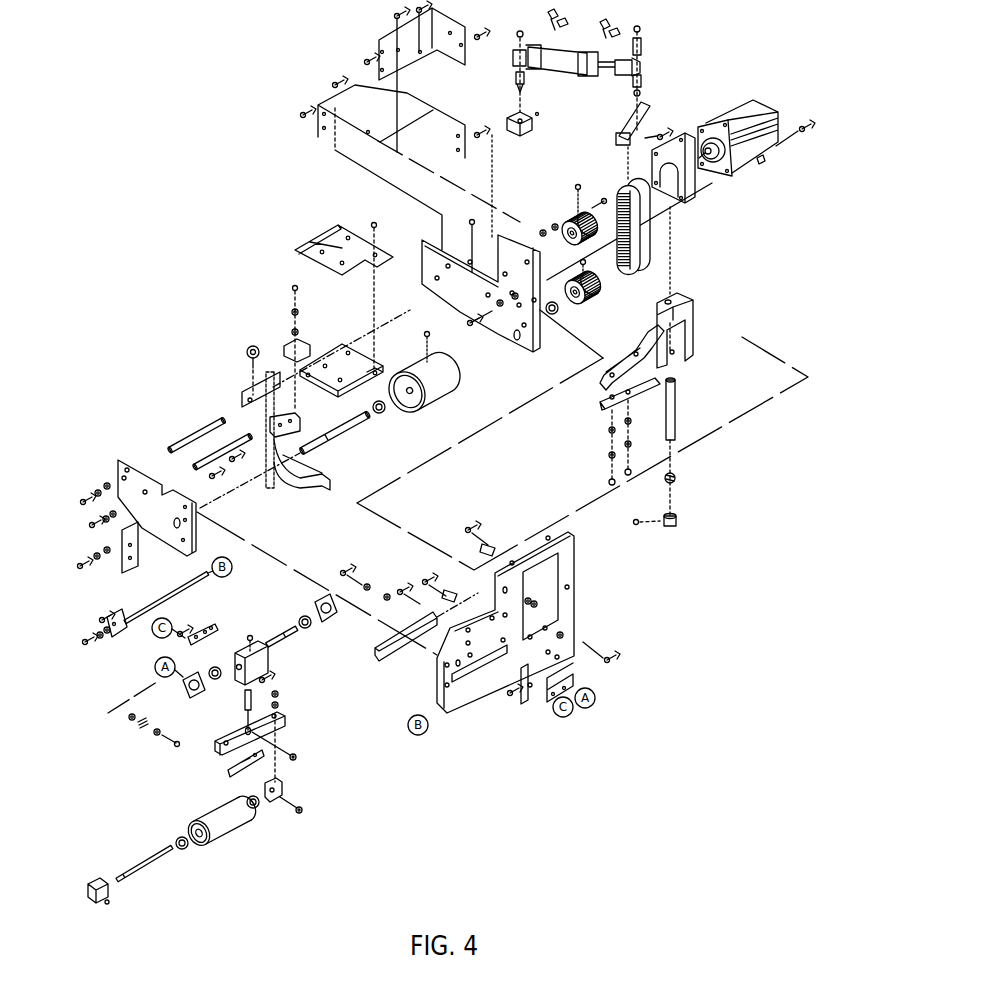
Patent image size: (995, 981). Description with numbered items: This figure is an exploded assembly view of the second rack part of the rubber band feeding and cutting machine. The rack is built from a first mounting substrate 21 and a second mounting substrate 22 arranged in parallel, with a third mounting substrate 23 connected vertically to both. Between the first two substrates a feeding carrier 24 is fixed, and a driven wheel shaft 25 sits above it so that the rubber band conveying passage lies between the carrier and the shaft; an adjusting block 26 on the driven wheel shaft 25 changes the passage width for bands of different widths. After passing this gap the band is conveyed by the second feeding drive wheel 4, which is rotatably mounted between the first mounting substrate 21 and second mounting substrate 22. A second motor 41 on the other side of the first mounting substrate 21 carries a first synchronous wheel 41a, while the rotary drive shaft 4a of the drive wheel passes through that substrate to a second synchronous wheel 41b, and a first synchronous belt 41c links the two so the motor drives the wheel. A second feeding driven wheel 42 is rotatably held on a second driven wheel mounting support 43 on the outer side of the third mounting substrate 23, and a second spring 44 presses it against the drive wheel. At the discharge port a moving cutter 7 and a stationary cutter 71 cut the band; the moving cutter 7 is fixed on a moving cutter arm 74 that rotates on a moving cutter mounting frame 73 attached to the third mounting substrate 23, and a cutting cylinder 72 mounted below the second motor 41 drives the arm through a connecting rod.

The second feeding drive wheel 4 is at (430, 388).
The rotary drive shaft 4a is at (333, 437).
The moving cutter 7 is at (607, 396).
The first mounting substrate 21 is at (503, 328).
The second mounting substrate 22 is at (117, 468).
The third mounting substrate 23 is at (567, 629).
The feeding carrier 24 is at (296, 249).
The driven wheel shaft 25 is at (192, 434).
The adjusting block 26 is at (270, 402).
The second motor 41 is at (741, 155).
The first synchronous wheel 41a is at (575, 218).
The second synchronous wheel 41b is at (590, 294).
The first synchronous belt 41c is at (640, 233).
The second feeding driven wheel 42 is at (228, 824).
The second driven wheel mounting support 43 is at (262, 663).
The second spring 44 is at (136, 727).
The stationary cutter 71 is at (393, 647).
The cutting cylinder 72 is at (553, 55).
The moving cutter mounting frame 73 is at (693, 348).
The moving cutter arm 74 is at (632, 351).